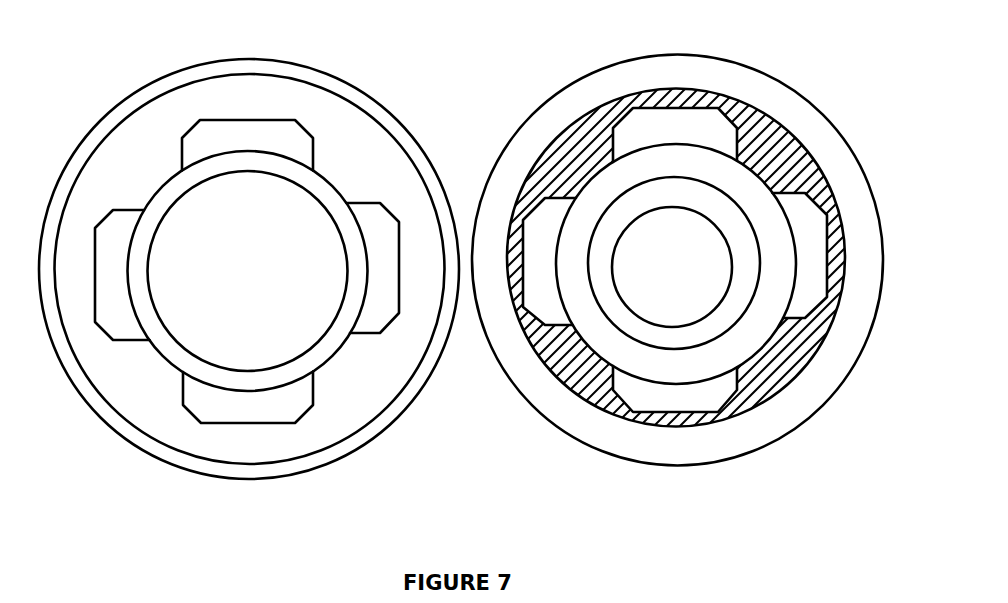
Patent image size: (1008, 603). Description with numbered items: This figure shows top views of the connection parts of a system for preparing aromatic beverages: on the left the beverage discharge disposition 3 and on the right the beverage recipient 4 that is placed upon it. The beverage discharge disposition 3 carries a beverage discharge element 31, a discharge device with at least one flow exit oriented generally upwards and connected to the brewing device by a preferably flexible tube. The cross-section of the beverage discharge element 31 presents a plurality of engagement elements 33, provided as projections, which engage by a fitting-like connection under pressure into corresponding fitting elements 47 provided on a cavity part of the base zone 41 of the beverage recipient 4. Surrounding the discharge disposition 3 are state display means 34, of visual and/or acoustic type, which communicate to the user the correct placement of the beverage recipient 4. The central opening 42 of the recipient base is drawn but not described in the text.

The beverage discharge disposition 3 is at (249, 289).
The beverage recipient 4 is at (591, 260).
The beverage discharge element 31 is at (248, 271).
The engagement elements 33 is at (247, 271).
The state display means 34 is at (288, 470).
The base zone 41 is at (677, 260).
The shaft bore 42 is at (674, 263).
The fitting elements 47 is at (724, 128).